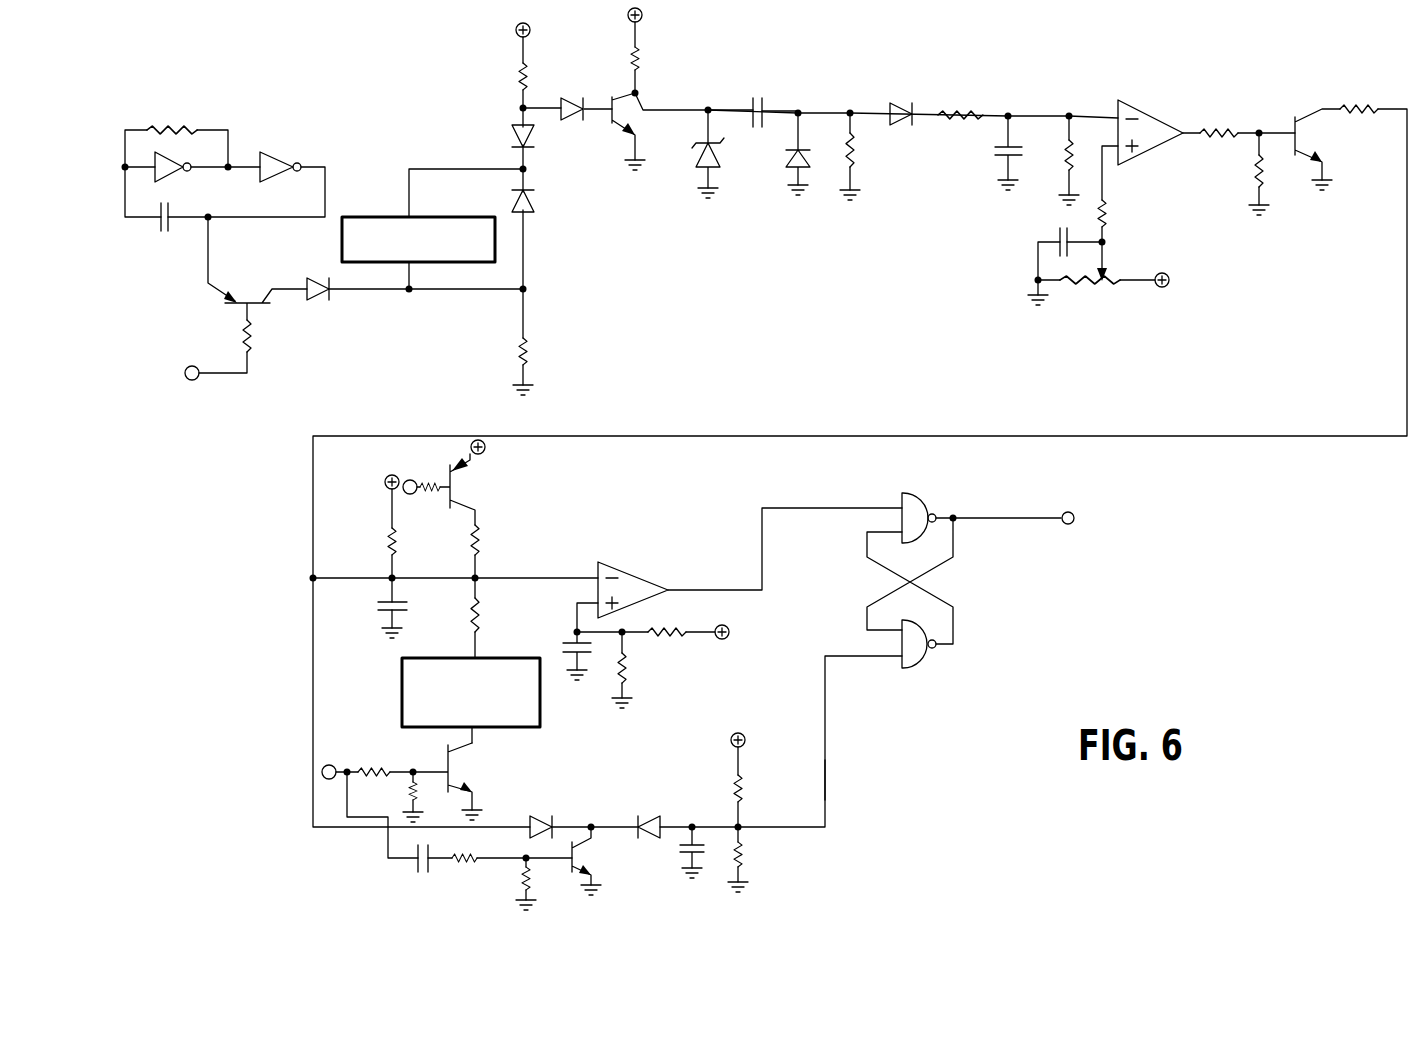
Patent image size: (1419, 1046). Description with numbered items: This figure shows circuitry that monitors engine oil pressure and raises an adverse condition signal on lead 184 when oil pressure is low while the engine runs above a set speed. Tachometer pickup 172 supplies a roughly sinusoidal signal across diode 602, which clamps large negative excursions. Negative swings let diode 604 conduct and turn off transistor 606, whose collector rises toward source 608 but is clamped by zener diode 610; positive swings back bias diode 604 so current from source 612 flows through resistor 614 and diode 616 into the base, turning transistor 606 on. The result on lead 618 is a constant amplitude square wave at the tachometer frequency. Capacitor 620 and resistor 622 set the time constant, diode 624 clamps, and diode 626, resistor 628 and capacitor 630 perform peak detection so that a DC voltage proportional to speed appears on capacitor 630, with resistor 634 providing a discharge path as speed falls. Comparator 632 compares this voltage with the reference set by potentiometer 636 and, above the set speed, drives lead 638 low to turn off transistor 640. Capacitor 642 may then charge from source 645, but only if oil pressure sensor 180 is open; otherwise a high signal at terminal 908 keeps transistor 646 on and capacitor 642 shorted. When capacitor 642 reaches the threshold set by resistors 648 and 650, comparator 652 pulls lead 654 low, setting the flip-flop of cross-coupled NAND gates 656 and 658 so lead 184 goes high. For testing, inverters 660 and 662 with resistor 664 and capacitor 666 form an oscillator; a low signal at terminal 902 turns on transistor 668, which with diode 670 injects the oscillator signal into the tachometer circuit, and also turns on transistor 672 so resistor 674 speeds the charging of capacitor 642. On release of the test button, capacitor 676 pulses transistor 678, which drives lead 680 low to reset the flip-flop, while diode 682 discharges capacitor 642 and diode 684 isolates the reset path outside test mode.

The tachometer pickup 172 is at (376, 217).
The oil pressure sensor 180 is at (402, 692).
The lead 184 is at (1006, 518).
The diode 602 is at (534, 205).
The diode 604 is at (511, 137).
The transistor 606 is at (640, 130).
The source 608 is at (643, 17).
The zener diode 610 is at (696, 152).
The source 612 is at (514, 30).
The resistor 614 is at (529, 80).
The diode 616 is at (571, 118).
The lead 618 is at (708, 102).
The capacitor 620 is at (762, 112).
The resistor 622 is at (858, 152).
The diode 624 is at (786, 162).
The diode 626 is at (898, 102).
The resistor 628 is at (963, 110).
The capacitor 630 is at (998, 152).
The comparator 632 is at (1130, 100).
The resistor 634 is at (1060, 158).
The potentiometer 636 is at (1102, 290).
The lead 638 is at (1208, 126).
The transistor 640 is at (1306, 143).
The capacitor 642 is at (378, 603).
The source 645 is at (385, 483).
The transistor 646 is at (455, 775).
The resistor 648 is at (670, 633).
The resistor 650 is at (630, 663).
The comparator 652 is at (630, 576).
The lead 654 is at (828, 508).
The NAND gate 656 is at (912, 502).
The NAND gate 658 is at (906, 670).
The inverter 660 is at (167, 182).
The inverter 662 is at (268, 184).
The resistor 664 is at (162, 130).
The capacitor 666 is at (158, 232).
The transistor 668 is at (246, 297).
The diode 670 is at (305, 298).
The transistor 672 is at (478, 492).
The resistor 674 is at (484, 542).
The capacitor 676 is at (415, 868).
The transistor 678 is at (591, 862).
The lead 680 is at (826, 775).
The diode 682 is at (538, 815).
The diode 684 is at (650, 816).
The terminal 902 is at (186, 377).
The terminal 908 is at (322, 772).